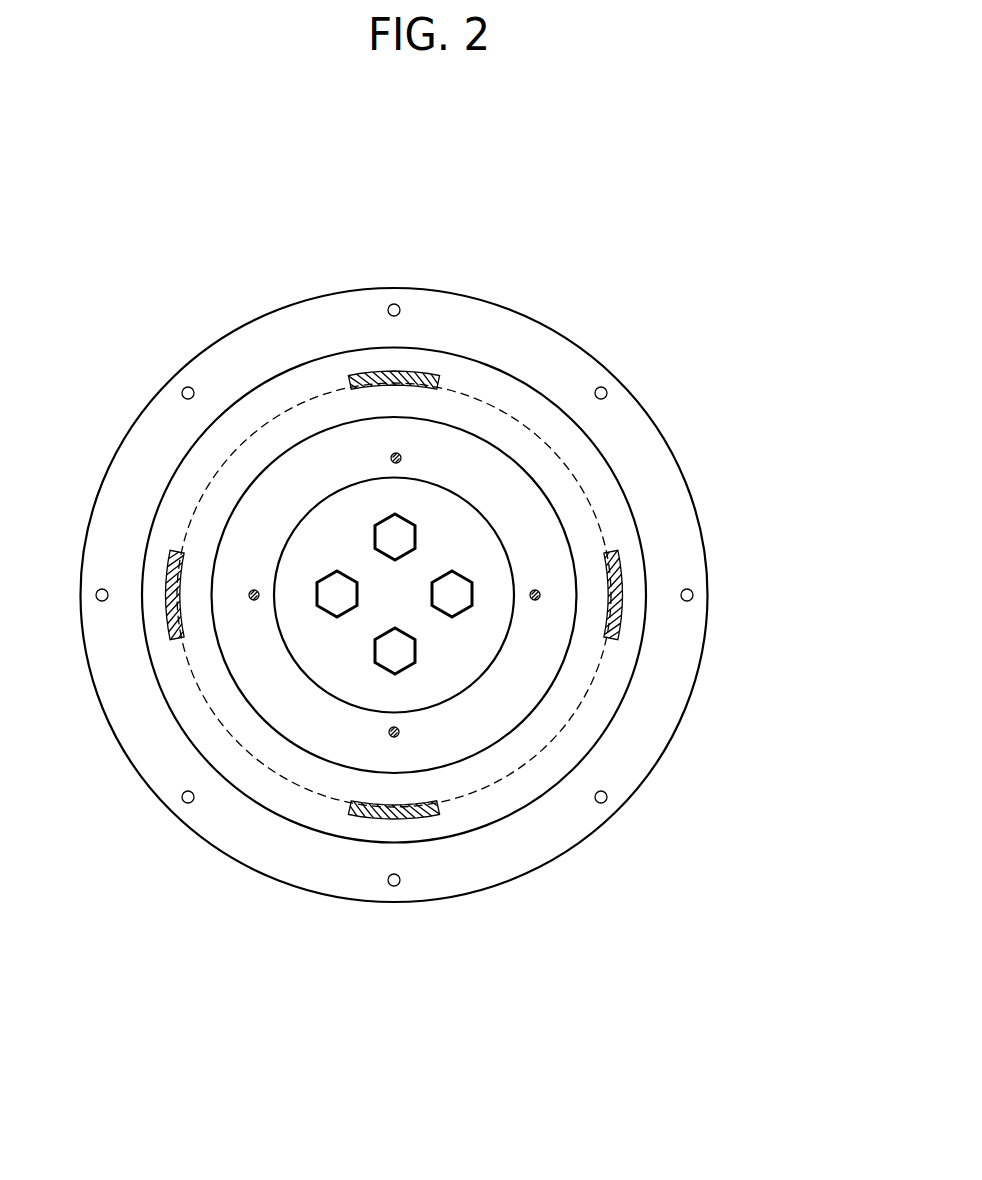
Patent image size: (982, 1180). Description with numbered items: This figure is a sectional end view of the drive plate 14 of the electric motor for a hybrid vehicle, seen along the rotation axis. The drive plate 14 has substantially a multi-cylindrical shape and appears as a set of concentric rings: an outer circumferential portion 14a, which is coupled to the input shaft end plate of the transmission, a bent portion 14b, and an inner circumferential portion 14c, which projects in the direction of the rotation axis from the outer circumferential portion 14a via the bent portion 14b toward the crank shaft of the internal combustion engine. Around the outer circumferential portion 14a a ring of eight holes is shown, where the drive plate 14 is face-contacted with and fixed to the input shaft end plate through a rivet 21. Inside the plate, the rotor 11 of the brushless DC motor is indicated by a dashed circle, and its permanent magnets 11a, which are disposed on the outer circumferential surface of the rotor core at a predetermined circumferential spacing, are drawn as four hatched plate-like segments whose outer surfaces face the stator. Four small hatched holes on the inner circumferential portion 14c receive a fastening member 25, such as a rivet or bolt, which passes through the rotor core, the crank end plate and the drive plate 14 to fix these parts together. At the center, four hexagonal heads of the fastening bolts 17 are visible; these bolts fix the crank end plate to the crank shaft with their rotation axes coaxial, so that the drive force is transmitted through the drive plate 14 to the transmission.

The rotor 11 is at (493, 397).
The permanent magnets 11a is at (430, 376).
The drive plate 14 is at (461, 538).
The outer circumferential portion 14a is at (647, 445).
The bent portion 14b is at (615, 507).
The inner circumferential portion 14c is at (555, 562).
The fastening bolts 17 is at (374, 540).
The rivet 21 is at (392, 304).
The fastening member 25 is at (391, 458).